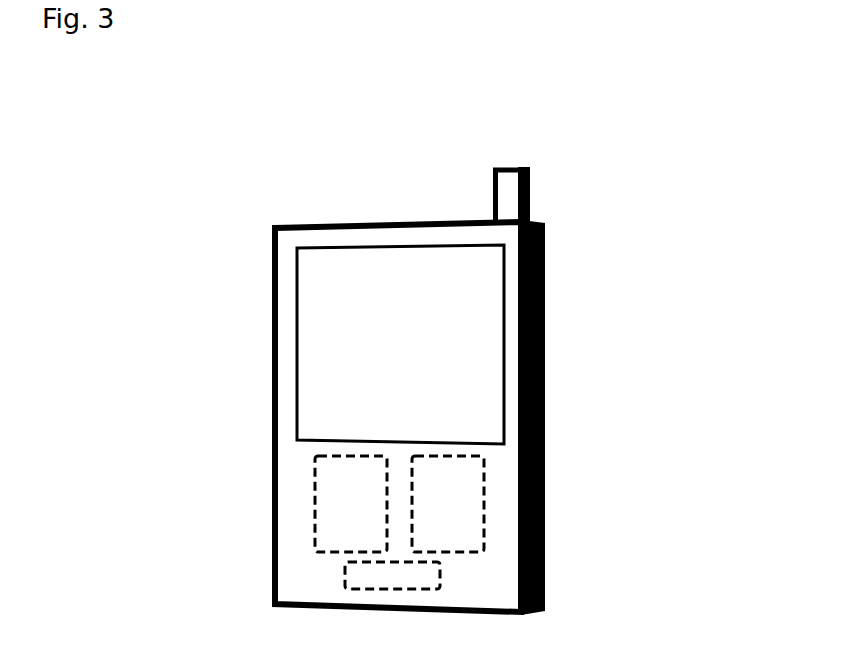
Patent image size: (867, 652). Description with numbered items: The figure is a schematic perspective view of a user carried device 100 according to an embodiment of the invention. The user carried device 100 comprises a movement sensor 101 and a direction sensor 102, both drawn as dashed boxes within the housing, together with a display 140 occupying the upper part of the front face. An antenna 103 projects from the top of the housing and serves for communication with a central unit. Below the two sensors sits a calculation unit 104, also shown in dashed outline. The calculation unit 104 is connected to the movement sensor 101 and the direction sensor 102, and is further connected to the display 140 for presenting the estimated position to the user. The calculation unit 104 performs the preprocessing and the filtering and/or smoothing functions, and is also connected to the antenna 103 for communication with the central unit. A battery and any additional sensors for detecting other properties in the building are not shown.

The user carried device 100 is at (108, 245).
The movement sensor 101 is at (322, 517).
The direction sensor 102 is at (463, 526).
The antenna 103 is at (507, 193).
The calculation unit 104 is at (412, 578).
The display 140 is at (450, 352).